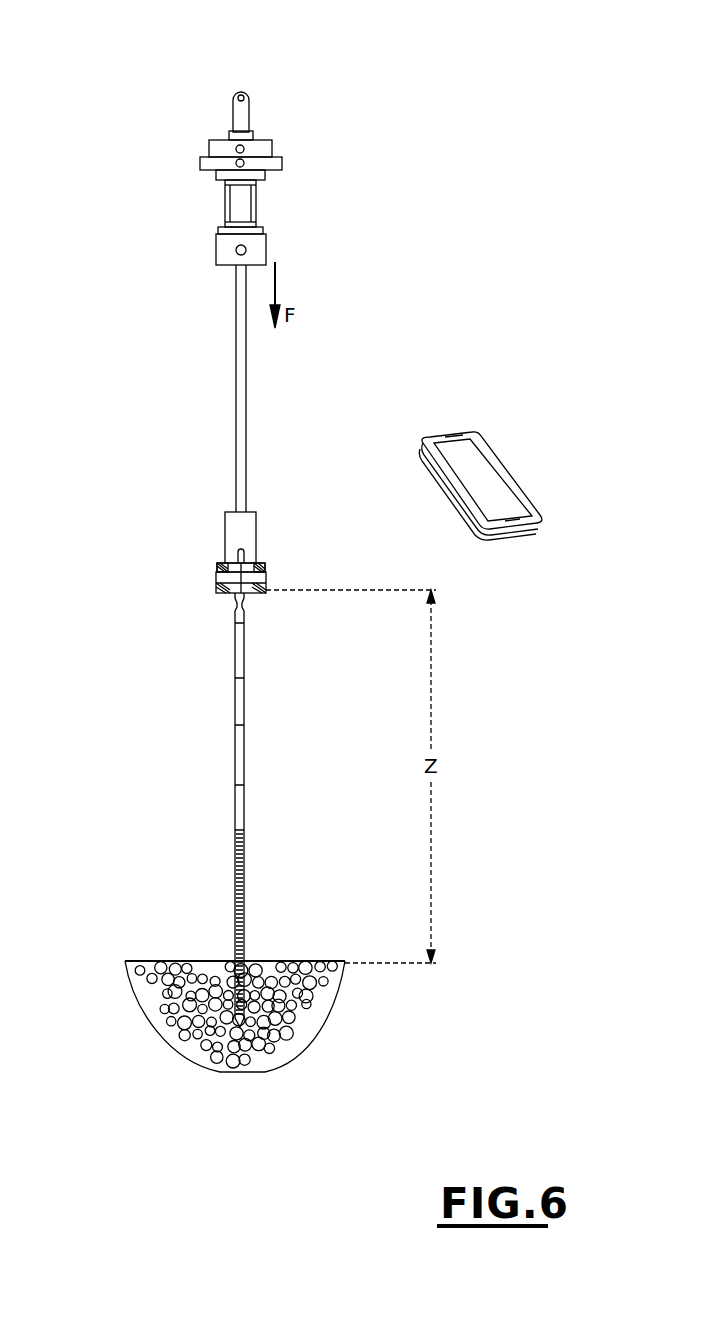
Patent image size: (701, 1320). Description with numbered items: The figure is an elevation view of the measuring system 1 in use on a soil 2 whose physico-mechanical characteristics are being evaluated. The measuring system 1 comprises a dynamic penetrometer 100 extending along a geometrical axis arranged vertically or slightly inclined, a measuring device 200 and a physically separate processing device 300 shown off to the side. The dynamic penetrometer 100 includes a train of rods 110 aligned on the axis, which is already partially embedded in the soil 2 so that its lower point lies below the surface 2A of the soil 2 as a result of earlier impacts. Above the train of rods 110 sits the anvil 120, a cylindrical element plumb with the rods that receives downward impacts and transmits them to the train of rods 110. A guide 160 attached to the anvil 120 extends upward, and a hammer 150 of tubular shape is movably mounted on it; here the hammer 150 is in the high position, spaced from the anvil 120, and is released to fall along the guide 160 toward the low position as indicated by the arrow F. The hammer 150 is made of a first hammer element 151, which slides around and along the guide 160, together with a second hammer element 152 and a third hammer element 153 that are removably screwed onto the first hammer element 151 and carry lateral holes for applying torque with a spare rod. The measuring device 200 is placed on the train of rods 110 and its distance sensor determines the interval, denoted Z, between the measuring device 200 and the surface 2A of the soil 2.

The measuring system 1 is at (203, 98).
The dynamic penetrometer 100 is at (232, 312).
The train of rods 110 is at (235, 765).
The anvil 120 is at (228, 522).
The hammer 150 is at (215, 250).
The first hammer element 151 is at (241, 208).
The second hammer element 152 is at (282, 162).
The third hammer element 153 is at (268, 148).
The guide 160 is at (240, 350).
The measuring device 200 is at (215, 580).
The processing device 300 is at (507, 447).
The soil 2 is at (170, 1005).
The surface of the soil 2A is at (180, 961).